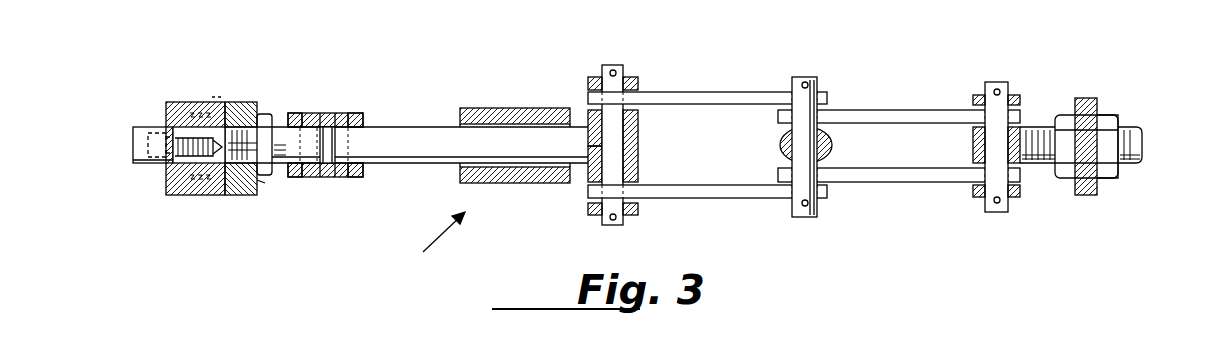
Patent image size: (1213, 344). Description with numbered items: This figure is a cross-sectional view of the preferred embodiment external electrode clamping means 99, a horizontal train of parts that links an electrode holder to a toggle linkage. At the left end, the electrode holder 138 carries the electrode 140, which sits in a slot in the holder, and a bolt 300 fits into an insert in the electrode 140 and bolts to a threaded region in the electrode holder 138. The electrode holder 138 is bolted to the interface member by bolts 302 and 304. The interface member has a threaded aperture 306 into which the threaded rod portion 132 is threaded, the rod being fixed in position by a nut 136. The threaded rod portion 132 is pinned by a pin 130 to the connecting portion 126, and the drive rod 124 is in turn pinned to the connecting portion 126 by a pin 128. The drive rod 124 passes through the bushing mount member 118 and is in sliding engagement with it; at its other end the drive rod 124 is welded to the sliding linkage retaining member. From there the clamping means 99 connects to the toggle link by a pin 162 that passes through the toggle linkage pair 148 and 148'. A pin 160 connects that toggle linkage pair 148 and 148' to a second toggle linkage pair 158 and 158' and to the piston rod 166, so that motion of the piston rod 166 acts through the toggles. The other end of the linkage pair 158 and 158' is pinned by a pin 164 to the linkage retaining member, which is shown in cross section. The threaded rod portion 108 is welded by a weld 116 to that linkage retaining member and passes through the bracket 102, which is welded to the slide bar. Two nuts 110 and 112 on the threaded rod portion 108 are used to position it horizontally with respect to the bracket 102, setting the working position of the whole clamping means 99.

The external electrode clamping means 99 is at (432, 242).
The bracket 102 is at (1083, 102).
The threaded rod portion 108 is at (1140, 137).
The nut 110 is at (1068, 173).
The nut 112 is at (1112, 118).
The weld 116 is at (1028, 127).
The bushing mount member 118 is at (515, 183).
The drive rod 124 is at (415, 150).
The connecting portion 126 is at (327, 118).
The pin 128 is at (363, 118).
The pin 130 is at (320, 173).
The threaded rod portion 132 is at (278, 122).
The nut 136 is at (262, 174).
The electrode holder 138 is at (183, 192).
The electrode 140 is at (150, 163).
The toggle linkage 148 is at (707, 218).
The toggle linkage 148' is at (707, 75).
The toggle linkage 158 is at (899, 210).
The toggle linkage 158' is at (899, 88).
The pin 160 is at (800, 217).
The pin 162 is at (622, 65).
The pin 164 is at (995, 83).
The piston rod 166 is at (778, 145).
The bolt 300 is at (133, 147).
The bolt 302 is at (217, 97).
The bolt 304 is at (263, 183).
The threaded aperture 306 is at (225, 125).